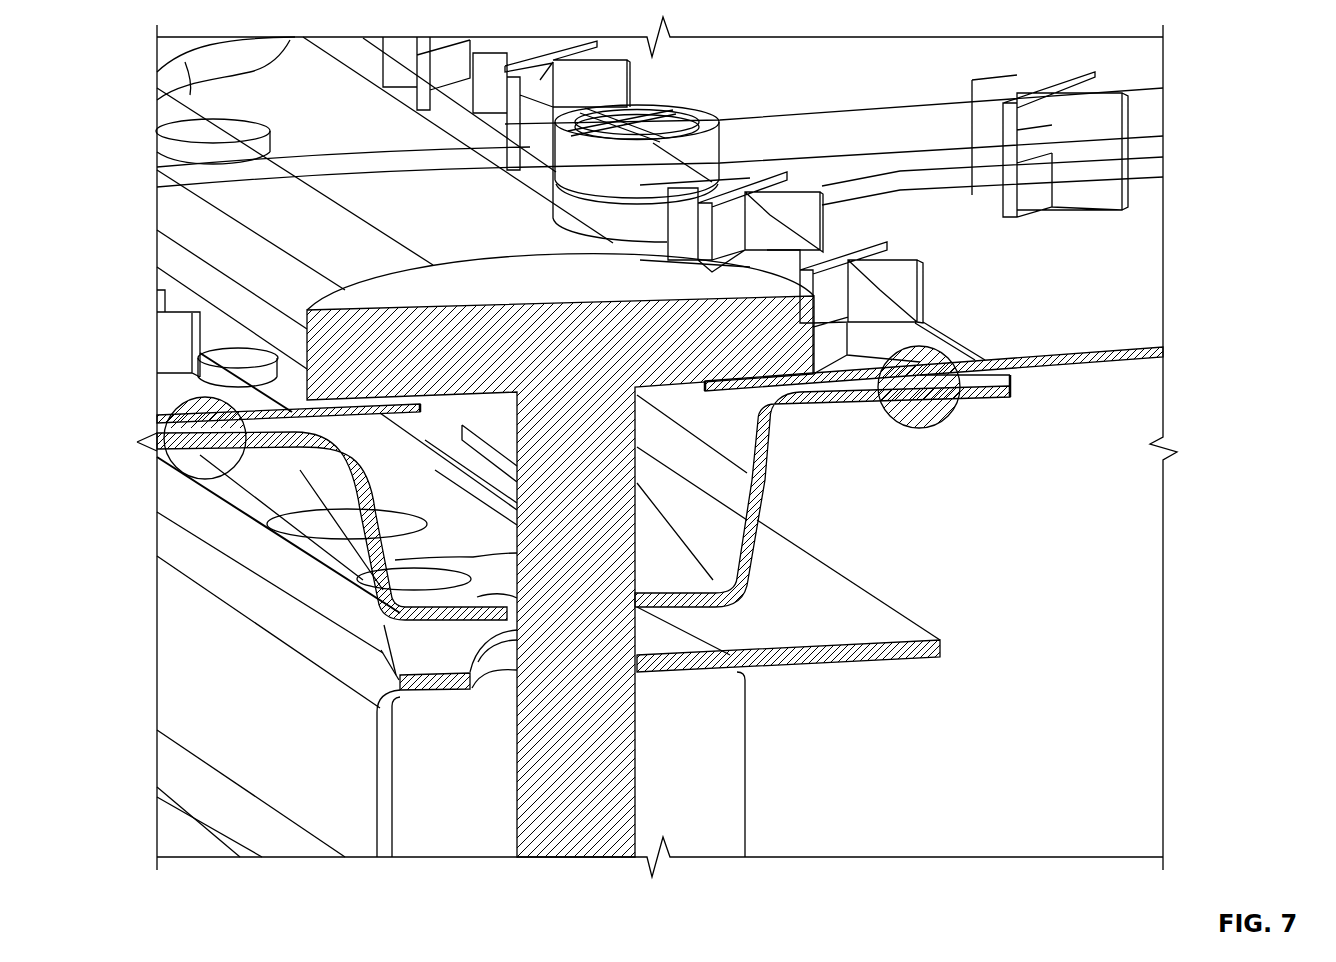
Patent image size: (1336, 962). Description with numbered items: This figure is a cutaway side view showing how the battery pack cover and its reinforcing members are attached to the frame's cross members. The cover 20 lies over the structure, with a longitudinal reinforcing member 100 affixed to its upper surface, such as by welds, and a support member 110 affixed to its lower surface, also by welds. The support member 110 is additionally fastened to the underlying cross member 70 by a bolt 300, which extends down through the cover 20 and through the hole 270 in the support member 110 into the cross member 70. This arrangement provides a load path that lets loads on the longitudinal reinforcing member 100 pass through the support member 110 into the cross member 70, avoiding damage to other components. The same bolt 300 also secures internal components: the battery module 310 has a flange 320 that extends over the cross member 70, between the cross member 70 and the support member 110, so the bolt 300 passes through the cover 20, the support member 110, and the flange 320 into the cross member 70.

The cover 20 is at (1140, 366).
The cross member 70 is at (193, 555).
The longitudinal reinforcing member 100 is at (900, 178).
The support member 110 is at (762, 493).
The hole 270 is at (475, 557).
The bolt 300 is at (358, 308).
The battery module 310 is at (872, 768).
The flange 320 is at (390, 653).